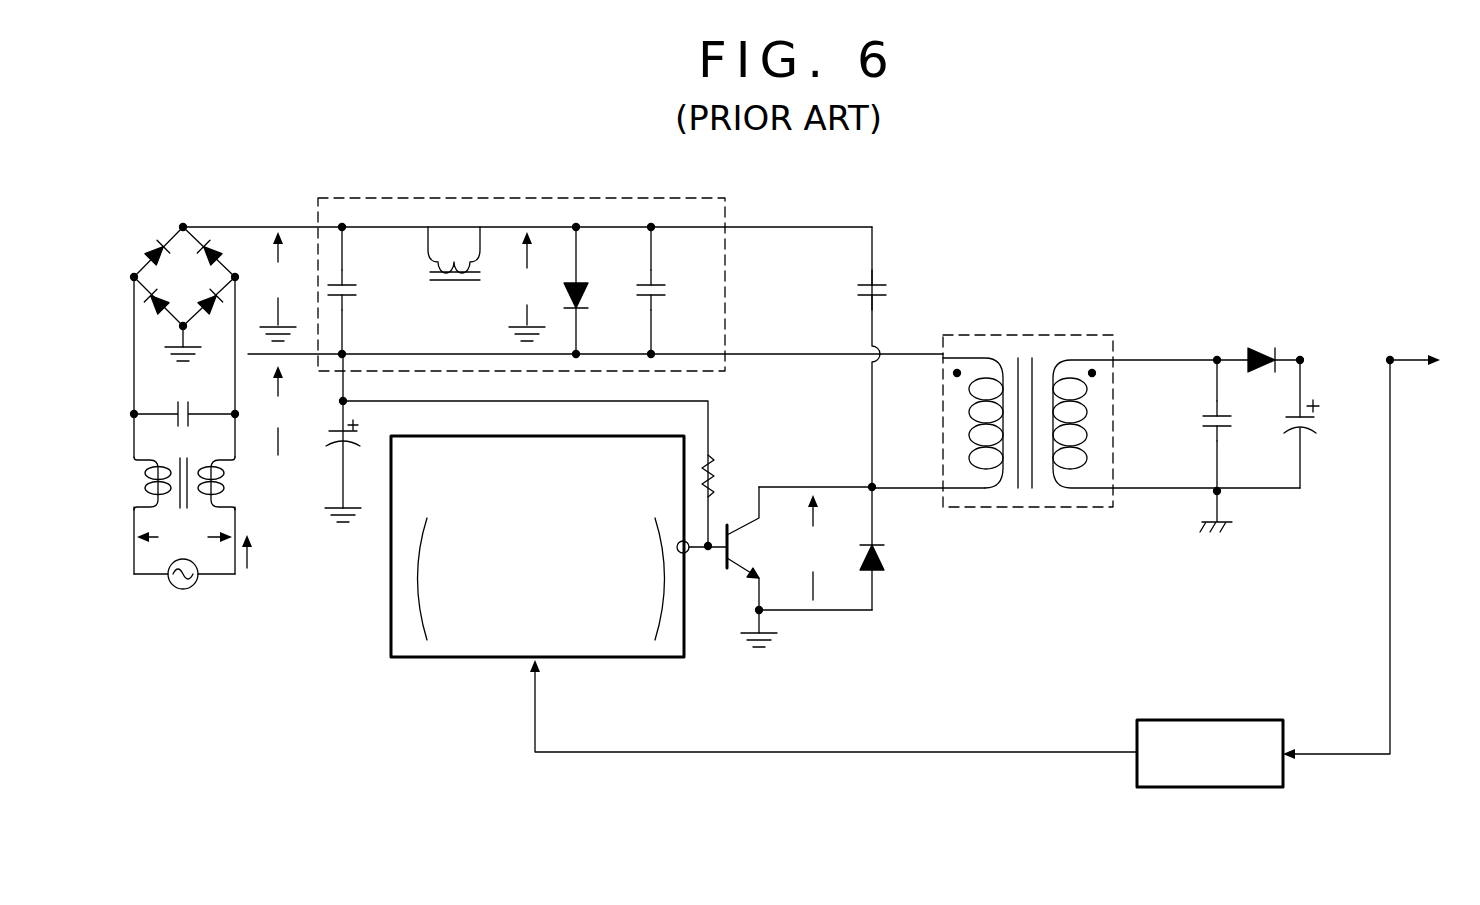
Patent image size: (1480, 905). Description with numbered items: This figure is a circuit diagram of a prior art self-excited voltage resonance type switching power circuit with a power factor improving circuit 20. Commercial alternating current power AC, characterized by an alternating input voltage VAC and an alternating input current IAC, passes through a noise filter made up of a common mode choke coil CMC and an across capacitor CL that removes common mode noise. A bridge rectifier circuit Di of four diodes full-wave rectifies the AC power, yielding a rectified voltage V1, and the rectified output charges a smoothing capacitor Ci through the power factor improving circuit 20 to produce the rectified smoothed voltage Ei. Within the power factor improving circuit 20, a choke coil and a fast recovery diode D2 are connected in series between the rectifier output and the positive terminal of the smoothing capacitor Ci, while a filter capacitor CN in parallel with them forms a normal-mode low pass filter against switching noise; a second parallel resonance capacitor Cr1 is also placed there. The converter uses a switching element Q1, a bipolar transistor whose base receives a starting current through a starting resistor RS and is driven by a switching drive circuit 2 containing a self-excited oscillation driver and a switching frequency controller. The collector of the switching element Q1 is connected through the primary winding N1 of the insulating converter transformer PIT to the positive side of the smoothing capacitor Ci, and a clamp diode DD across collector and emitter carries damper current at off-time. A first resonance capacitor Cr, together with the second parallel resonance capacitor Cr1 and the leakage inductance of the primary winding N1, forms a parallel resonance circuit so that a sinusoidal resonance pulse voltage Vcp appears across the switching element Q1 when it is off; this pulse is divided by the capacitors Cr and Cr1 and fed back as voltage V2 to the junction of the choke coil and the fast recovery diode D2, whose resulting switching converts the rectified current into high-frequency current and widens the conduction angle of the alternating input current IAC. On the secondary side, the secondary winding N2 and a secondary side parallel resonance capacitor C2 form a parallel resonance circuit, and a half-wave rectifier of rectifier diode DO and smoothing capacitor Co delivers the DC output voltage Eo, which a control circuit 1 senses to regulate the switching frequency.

The power factor improving circuit 20 is at (506, 197).
The switching drive circuit 2 is at (590, 660).
The control circuit 1 is at (1210, 720).
The bridge rectifier circuit Di is at (196, 288).
The across capacitor CL is at (184, 367).
The common mode choke coil CMC is at (205, 483).
The alternating input voltage VAC is at (184, 540).
The alternating input current IAC is at (267, 551).
The alternating current power AC is at (184, 590).
The rectified voltage V1 is at (278, 286).
The rectified smoothed voltage Ei is at (276, 410).
The smoothing capacitor Ci is at (353, 471).
The filter capacitor CN is at (361, 290).
The voltage fed back V2 is at (527, 286).
The fast recovery diode D2 is at (593, 290).
The second parallel resonance capacitor Cr1 is at (671, 290).
The first resonance capacitor Cr is at (885, 290).
The starting resistor RS is at (724, 476).
The switching element Q1 is at (752, 567).
The resonance pulse voltage Vcp is at (817, 547).
The clamp diode DD is at (891, 559).
The insulating converter transformer PIT is at (1028, 405).
The primary winding N1 is at (967, 417).
The secondary winding N2 is at (1087, 418).
The rectifier diode DO is at (1258, 346).
The secondary side parallel resonance capacitor C2 is at (1232, 446).
The smoothing capacitor Co is at (1315, 424).
The DC output voltage Eo is at (1432, 362).